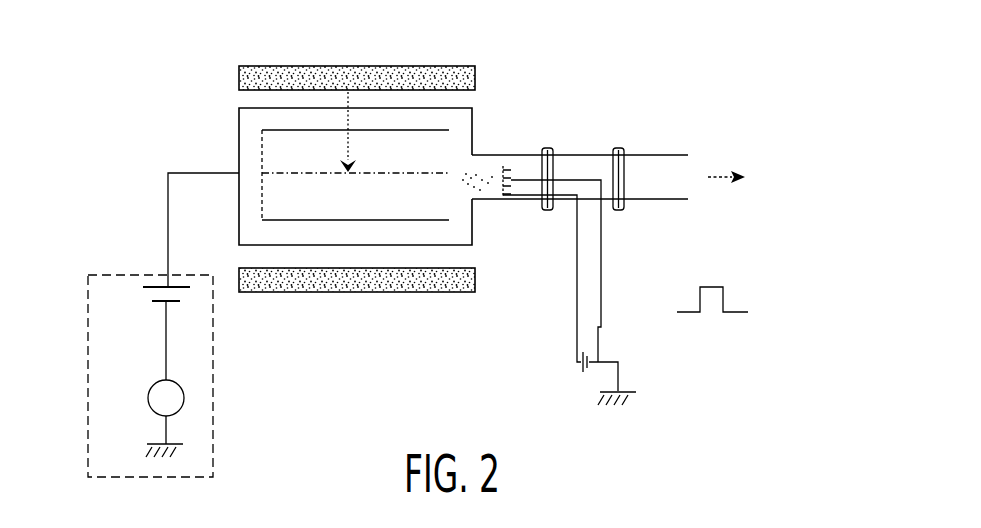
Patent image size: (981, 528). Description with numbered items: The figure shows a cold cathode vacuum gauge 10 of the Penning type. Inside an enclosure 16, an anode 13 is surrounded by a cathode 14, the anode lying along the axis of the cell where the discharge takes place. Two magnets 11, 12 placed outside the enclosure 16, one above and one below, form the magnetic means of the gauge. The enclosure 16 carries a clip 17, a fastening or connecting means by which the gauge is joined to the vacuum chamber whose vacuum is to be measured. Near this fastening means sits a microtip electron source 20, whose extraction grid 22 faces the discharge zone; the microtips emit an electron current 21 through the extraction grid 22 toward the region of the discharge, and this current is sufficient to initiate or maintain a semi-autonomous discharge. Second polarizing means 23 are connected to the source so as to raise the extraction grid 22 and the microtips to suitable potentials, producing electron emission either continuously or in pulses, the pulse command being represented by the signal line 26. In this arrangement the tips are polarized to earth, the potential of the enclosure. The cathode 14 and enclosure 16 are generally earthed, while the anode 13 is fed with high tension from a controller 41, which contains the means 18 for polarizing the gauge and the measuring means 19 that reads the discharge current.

The ion source apparatus 10 is at (190, 106).
The magnet 11 is at (407, 66).
The magnet 12 is at (413, 293).
The anode 13 is at (449, 175).
The cathode 14 is at (278, 222).
The enclosure 16 is at (238, 184).
The clip 17 is at (550, 213).
The means for polarizing the gauge 18 is at (143, 302).
The measuring means 19 is at (148, 398).
The microtip electron source 20 is at (512, 166).
The electron current 21 is at (483, 172).
The extraction grid 22 is at (500, 167).
The second polarizing means 23 is at (586, 371).
The pulse control line 26 is at (600, 312).
The controller 41 is at (213, 388).